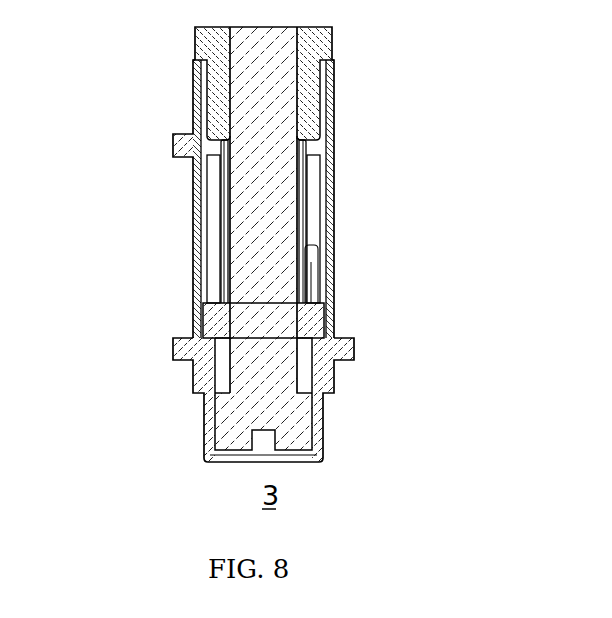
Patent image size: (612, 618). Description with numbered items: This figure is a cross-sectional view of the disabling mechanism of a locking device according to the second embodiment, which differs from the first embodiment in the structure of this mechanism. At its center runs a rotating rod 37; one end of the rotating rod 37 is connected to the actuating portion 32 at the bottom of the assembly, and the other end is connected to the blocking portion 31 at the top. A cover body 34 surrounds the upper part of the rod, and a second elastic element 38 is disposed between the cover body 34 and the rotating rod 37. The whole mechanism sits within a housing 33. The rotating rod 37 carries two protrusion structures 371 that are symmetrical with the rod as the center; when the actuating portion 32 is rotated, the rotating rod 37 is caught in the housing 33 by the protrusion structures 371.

The blocking portion 31 is at (258, 58).
The actuating portion 32 is at (240, 418).
The housing 33 is at (194, 178).
The cover body 34 is at (203, 53).
The rotating rod 37 is at (250, 265).
The protrusion structure 371 is at (315, 318).
The second elastic element 38 is at (302, 207).